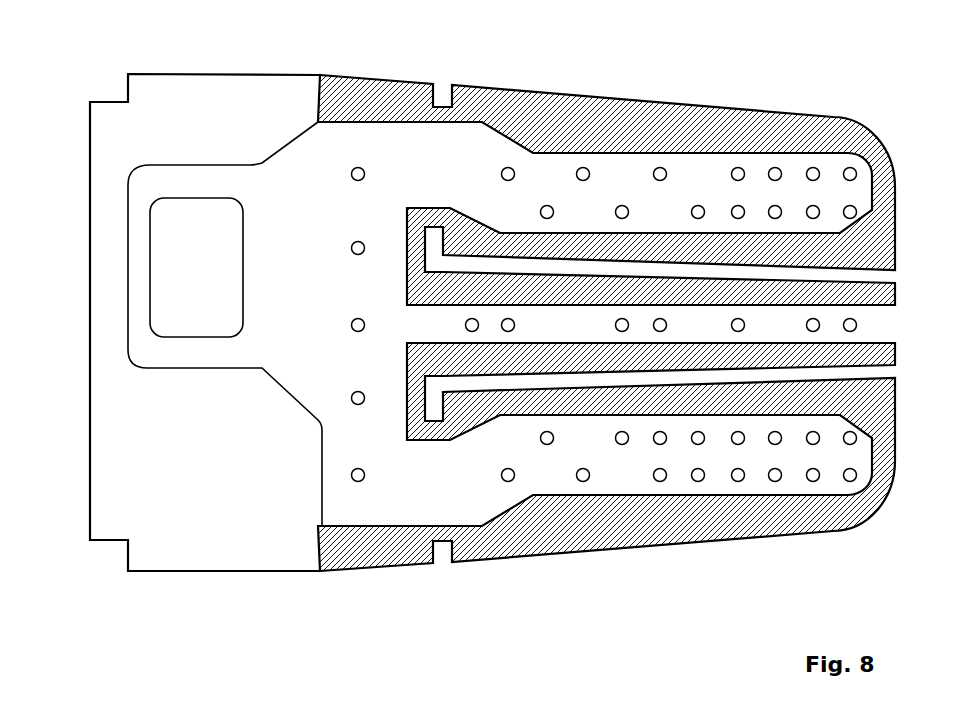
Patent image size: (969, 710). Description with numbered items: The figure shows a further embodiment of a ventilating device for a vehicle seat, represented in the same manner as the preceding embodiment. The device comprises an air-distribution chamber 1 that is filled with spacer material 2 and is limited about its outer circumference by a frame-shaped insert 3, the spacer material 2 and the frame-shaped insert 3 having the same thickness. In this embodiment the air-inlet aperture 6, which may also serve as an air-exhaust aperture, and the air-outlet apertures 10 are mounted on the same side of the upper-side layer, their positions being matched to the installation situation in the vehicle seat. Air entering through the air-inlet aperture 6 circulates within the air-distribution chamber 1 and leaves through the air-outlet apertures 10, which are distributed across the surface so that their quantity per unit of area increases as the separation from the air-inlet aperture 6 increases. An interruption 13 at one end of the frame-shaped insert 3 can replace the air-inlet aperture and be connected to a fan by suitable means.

The air-distribution chamber 1 is at (557, 314).
The spacer material 2 is at (411, 327).
The frame-shaped insert 3 is at (627, 305).
The air-inlet aperture 6 is at (142, 227).
The air-outlet apertures 10 is at (604, 318).
The interruption 13 is at (177, 322).